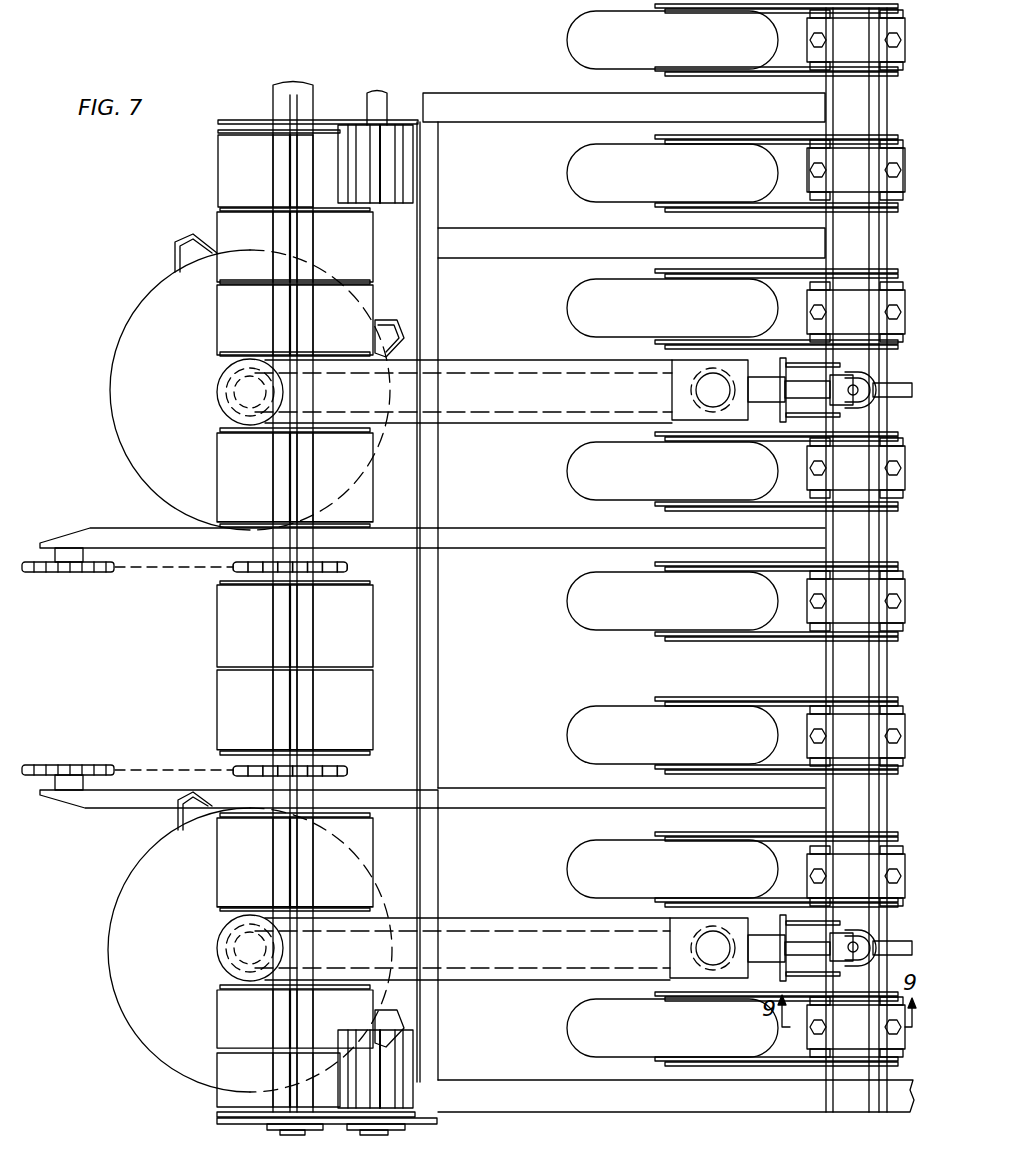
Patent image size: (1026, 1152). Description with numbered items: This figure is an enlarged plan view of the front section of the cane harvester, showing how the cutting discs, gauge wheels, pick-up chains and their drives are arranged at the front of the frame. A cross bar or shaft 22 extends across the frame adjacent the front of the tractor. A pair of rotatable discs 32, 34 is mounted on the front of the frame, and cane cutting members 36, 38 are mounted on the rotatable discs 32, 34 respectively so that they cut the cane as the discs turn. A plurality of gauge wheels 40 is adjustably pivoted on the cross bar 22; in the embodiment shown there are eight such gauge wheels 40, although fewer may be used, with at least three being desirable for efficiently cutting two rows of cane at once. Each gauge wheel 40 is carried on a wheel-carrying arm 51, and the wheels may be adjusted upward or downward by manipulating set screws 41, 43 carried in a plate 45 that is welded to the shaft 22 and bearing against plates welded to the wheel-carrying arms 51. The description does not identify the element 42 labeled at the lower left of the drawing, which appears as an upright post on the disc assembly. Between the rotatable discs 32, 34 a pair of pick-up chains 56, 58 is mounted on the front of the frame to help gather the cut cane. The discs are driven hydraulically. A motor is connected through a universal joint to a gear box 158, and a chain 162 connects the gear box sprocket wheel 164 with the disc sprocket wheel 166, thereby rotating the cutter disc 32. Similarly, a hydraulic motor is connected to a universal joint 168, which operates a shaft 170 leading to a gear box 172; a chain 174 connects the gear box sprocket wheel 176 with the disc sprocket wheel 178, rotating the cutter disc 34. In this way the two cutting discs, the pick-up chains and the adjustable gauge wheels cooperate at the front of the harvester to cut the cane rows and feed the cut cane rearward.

The cross bar 22 is at (826, 673).
The rotatable disc 32 is at (112, 940).
The rotatable disc 34 is at (115, 363).
The cane cutting member 36 is at (178, 822).
The cane cutting member 38 is at (186, 236).
The gauge wheel 40 is at (573, 180).
The set screw 41 is at (866, 136).
The post 42 is at (326, 617).
The set screw 43 is at (815, 192).
The plate 45 is at (812, 152).
The wheel-carrying arm 51 is at (800, 136).
The pick-up chain 56 is at (128, 768).
The pick-up chain 58 is at (148, 568).
The gear box 158 is at (737, 962).
The chain 162 is at (538, 985).
The gear box sprocket wheel 164 is at (700, 950).
The disc sprocket wheel 166 is at (232, 962).
The universal joint 168 is at (851, 400).
The shaft 170 is at (762, 380).
The gear box 172 is at (735, 415).
The chain 174 is at (515, 425).
The gear box sprocket wheel 176 is at (700, 395).
The disc sprocket wheel 178 is at (232, 405).